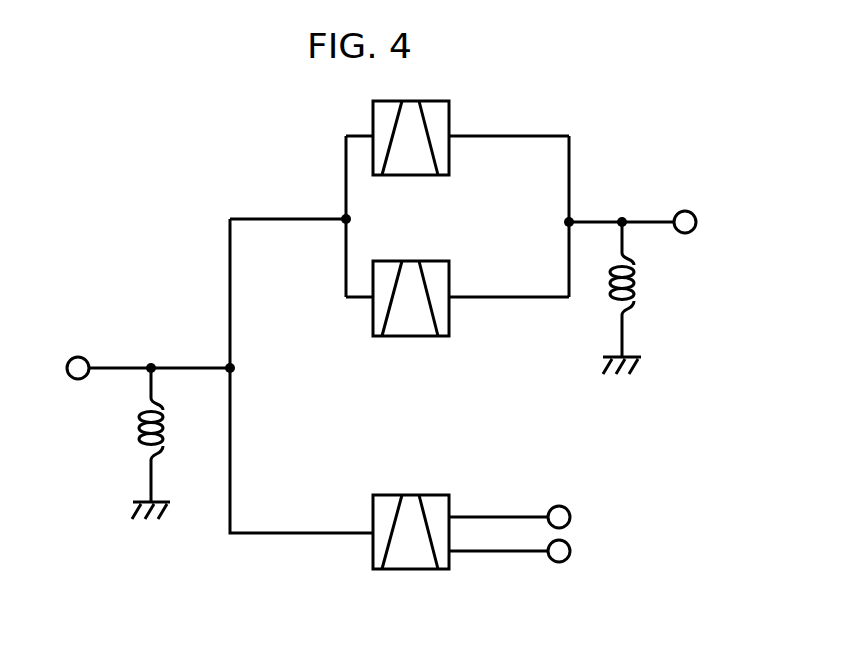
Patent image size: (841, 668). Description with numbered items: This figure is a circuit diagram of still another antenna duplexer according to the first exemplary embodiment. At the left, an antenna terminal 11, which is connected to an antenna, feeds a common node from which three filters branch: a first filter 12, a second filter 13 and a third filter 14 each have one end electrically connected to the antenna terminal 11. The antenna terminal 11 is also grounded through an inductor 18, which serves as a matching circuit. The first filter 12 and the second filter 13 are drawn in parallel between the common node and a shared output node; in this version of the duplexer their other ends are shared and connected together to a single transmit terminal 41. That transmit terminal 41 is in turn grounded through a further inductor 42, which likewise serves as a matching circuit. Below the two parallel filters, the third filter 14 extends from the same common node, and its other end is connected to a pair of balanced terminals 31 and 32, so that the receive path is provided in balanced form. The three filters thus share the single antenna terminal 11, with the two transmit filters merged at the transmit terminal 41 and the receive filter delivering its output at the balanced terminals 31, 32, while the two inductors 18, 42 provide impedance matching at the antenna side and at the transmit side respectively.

The antenna terminal 11 is at (73, 352).
The first filter 12 is at (449, 117).
The second filter 13 is at (449, 318).
The third filter 14 is at (449, 564).
The inductor 18 is at (128, 438).
The balanced terminal 31 is at (570, 520).
The balanced terminal 32 is at (570, 553).
The transmit terminal 41 is at (697, 228).
The inductor 42 is at (642, 297).